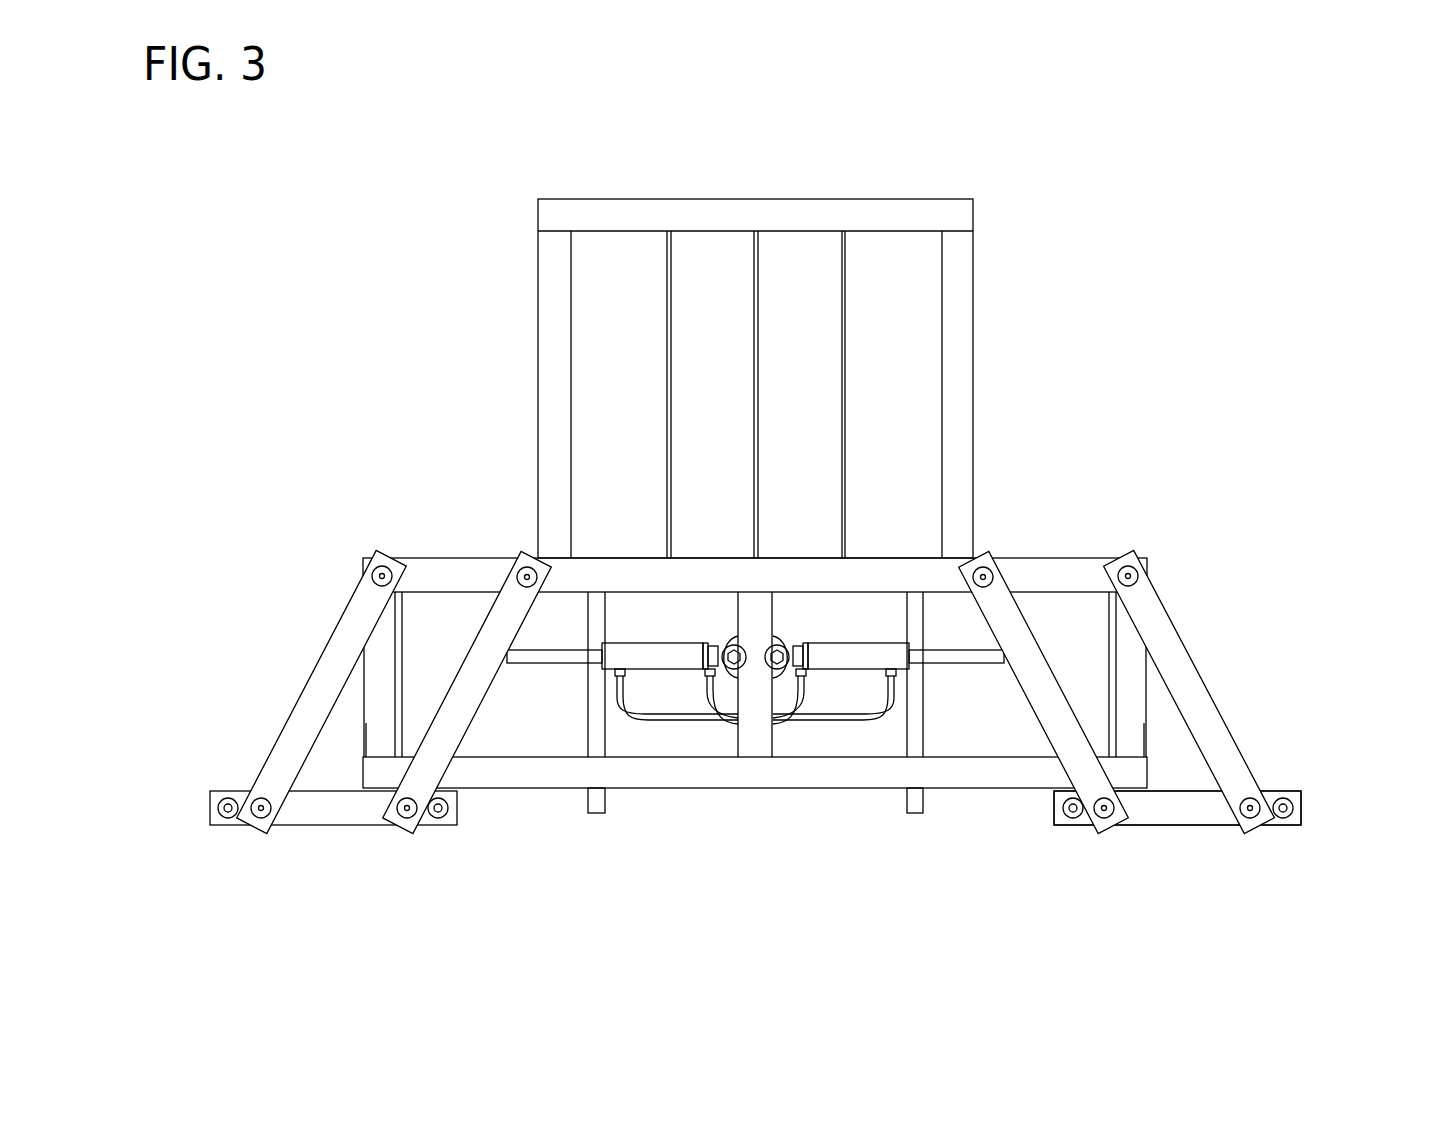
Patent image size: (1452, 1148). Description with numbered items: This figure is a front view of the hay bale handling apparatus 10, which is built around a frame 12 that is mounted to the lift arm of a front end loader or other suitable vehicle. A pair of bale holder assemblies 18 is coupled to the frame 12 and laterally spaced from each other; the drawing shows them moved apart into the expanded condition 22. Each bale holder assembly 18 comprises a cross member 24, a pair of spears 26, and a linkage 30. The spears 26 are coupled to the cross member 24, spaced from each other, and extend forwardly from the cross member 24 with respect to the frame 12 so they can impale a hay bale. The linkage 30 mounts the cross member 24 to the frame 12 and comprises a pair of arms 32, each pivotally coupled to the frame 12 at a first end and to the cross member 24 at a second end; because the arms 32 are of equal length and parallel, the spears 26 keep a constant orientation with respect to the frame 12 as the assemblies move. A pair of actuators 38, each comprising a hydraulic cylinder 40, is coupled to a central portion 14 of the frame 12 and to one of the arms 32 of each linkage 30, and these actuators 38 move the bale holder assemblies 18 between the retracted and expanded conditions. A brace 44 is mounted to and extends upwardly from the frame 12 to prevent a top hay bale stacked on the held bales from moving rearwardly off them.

The hay bale handling apparatus 10 is at (1067, 125).
The frame 12 is at (1040, 548).
The central portion 14 is at (753, 738).
The bale holder assembly 18 is at (1282, 743).
The expanded condition 22 is at (1065, 843).
The cross member 24 is at (330, 812).
The spear 26 is at (228, 810).
The linkage 30 is at (265, 742).
The arm 32 is at (300, 725).
The actuator 38 is at (680, 637).
The hydraulic cylinder 40 is at (660, 658).
The brace 44 is at (805, 208).